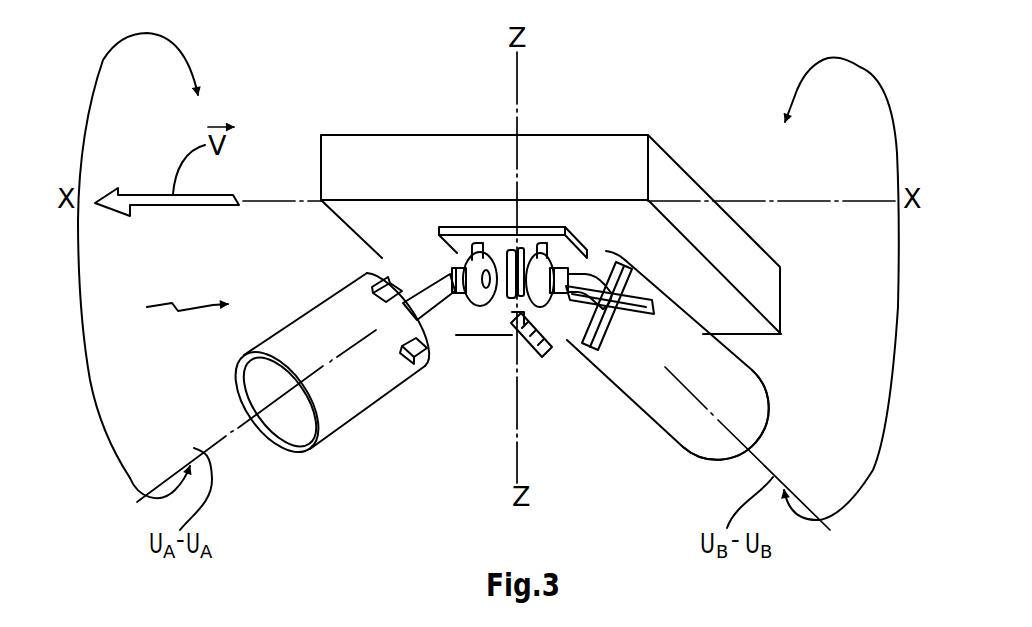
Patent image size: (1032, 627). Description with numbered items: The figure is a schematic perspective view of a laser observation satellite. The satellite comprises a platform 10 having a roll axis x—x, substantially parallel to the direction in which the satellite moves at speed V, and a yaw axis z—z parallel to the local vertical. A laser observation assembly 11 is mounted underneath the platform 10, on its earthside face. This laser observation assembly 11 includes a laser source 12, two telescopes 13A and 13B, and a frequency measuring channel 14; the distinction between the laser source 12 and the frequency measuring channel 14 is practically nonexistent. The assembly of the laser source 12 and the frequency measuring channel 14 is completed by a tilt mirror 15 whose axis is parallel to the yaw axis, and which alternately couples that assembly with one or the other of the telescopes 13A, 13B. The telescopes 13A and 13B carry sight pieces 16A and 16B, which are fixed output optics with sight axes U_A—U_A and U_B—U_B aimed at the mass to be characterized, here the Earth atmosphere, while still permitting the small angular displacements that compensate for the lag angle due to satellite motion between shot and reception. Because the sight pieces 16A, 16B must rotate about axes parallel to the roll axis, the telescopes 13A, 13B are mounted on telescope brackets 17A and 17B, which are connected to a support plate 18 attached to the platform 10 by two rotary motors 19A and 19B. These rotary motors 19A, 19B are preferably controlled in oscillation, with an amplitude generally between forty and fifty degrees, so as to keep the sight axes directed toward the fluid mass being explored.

The platform 10 is at (695, 185).
The laser observation assembly 11 is at (175, 307).
The laser source 12 is at (540, 353).
The telescope 13A is at (283, 403).
The telescope 13B is at (696, 393).
The frequency measuring channel 14 is at (565, 342).
The tilt mirror 15 is at (503, 303).
The sight piece 16A is at (262, 383).
The sight piece 16B is at (717, 441).
The telescope bracket 17A is at (432, 276).
The telescope bracket 17B is at (586, 273).
The support plate 18 is at (583, 228).
The rotary motor 19A is at (478, 308).
The rotary motor 19B is at (568, 338).